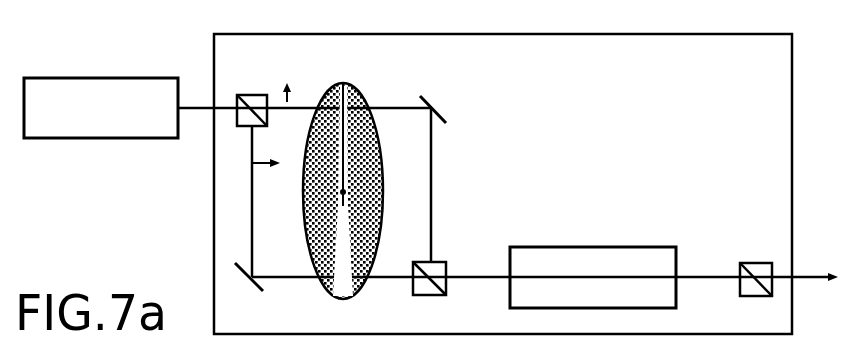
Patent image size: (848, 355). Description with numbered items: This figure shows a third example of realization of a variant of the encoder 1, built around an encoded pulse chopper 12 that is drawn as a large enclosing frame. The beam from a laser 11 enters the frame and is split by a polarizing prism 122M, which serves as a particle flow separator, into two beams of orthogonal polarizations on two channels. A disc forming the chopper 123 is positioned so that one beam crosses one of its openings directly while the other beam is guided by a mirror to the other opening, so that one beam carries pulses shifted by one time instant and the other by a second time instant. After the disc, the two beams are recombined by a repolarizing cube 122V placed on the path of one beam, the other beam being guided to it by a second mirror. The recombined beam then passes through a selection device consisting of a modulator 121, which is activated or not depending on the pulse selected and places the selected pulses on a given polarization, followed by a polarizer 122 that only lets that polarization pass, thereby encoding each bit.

The encoder 1 is at (181, 226).
The laser 11 is at (110, 115).
The encoded pulse chopper 12 is at (530, 75).
The polarizing prism 122M is at (250, 95).
The chopper 123 is at (385, 185).
The repolarizing cube 122V is at (418, 295).
The modulator 121 is at (609, 285).
The polarizer 122 is at (758, 262).